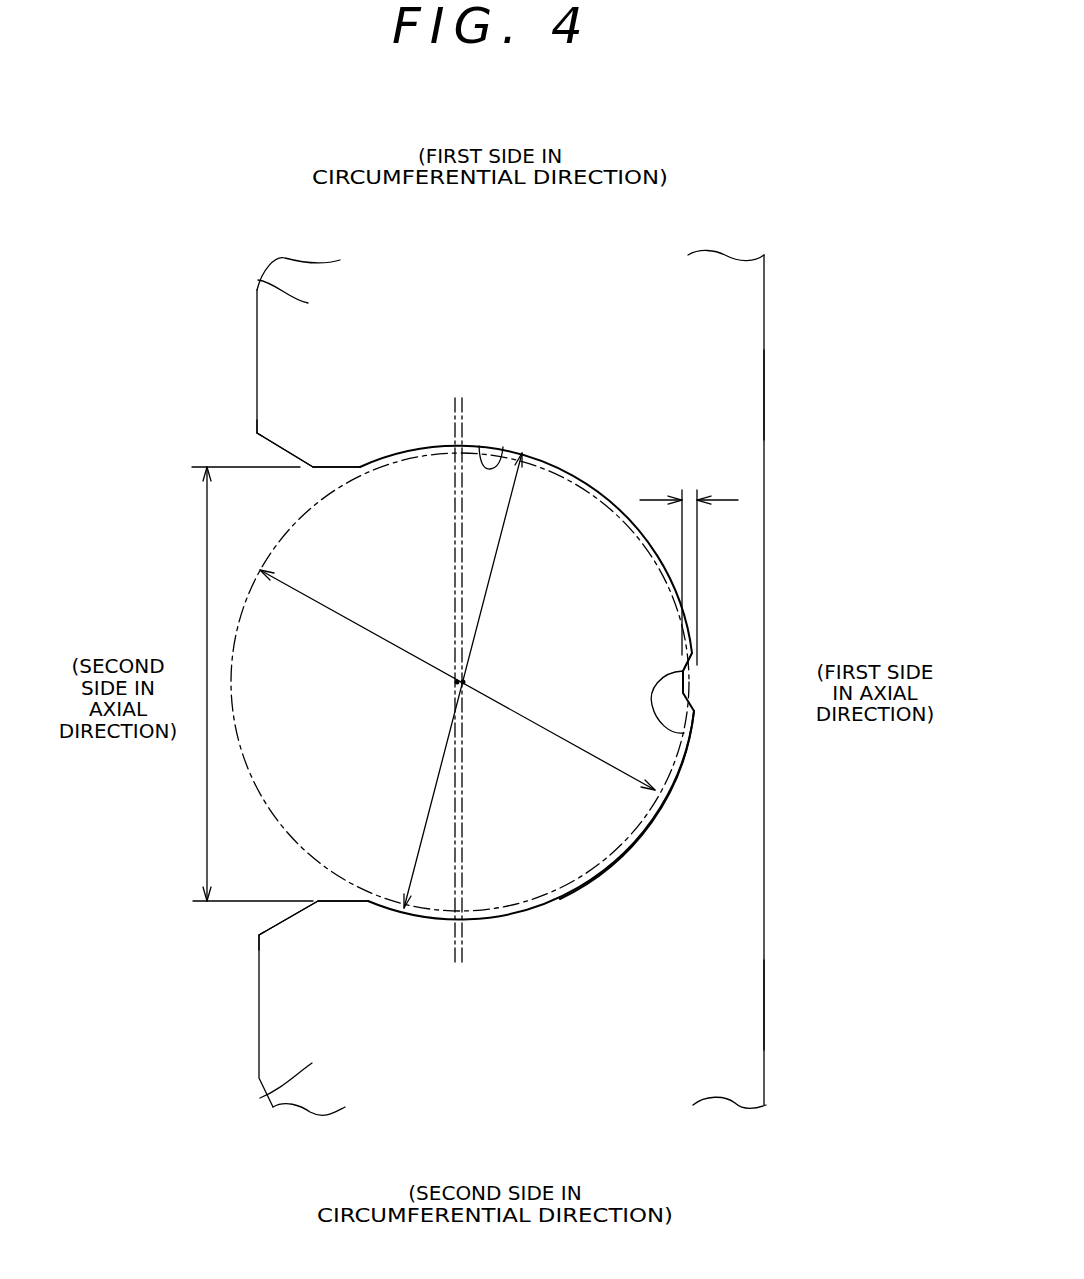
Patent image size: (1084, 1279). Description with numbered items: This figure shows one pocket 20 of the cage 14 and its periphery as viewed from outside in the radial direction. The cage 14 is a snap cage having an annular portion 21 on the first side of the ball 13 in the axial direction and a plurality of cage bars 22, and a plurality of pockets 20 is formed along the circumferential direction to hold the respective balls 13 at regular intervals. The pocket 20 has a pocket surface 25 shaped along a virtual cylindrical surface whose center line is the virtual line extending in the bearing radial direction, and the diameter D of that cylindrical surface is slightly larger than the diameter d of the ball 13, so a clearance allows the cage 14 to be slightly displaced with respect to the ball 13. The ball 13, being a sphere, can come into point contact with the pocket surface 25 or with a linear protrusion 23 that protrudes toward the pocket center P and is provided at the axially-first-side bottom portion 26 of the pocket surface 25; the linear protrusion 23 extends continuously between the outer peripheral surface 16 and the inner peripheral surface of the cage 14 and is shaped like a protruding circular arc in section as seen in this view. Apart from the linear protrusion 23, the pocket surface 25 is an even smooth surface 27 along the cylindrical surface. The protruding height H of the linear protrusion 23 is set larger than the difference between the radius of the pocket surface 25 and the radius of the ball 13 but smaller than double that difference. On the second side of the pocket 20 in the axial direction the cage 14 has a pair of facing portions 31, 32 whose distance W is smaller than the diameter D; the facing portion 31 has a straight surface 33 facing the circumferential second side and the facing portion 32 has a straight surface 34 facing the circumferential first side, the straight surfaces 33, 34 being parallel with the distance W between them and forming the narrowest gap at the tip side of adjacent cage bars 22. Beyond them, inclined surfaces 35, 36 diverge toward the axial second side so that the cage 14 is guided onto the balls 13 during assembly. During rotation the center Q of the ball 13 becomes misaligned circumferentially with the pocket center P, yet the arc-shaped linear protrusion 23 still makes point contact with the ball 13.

The ball 13 is at (597, 487).
The cage 14 is at (766, 1060).
The outer peripheral surface 16 is at (738, 1006).
The pocket 20 is at (353, 778).
The annular portion 21 is at (764, 395).
The cage bar 22 is at (262, 272).
The linear protrusion 23 is at (693, 678).
The pocket surface 25 is at (611, 862).
The axially-first-side bottom portion 26 is at (693, 734).
The even smooth surface 27 is at (481, 441).
The facing portion 31 is at (330, 450).
The facing portion 32 is at (334, 915).
The straight surface 33 is at (341, 468).
The straight surface 34 is at (343, 898).
The inclined surface 35 is at (260, 447).
The inclined surface 36 is at (280, 923).
The distance between facing portions W is at (203, 545).
The protruding height H is at (689, 564).
The diameter of the cylindrical surface D is at (496, 556).
The diameter of the ball d is at (338, 613).
The pocket center P is at (463, 682).
The center of the ball Q is at (457, 682).